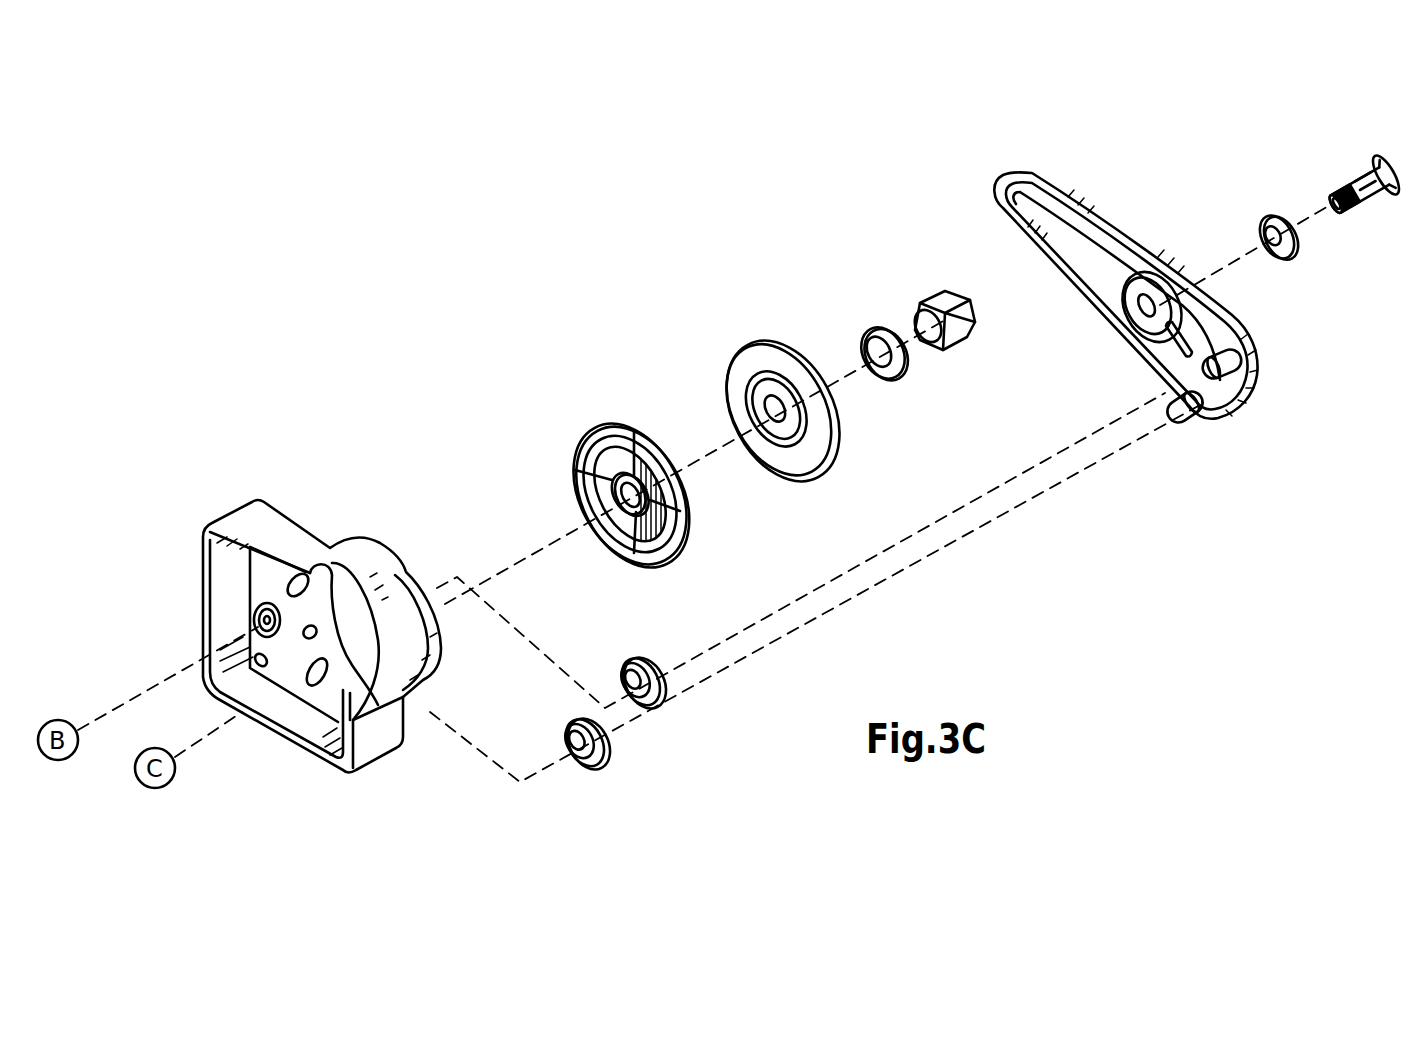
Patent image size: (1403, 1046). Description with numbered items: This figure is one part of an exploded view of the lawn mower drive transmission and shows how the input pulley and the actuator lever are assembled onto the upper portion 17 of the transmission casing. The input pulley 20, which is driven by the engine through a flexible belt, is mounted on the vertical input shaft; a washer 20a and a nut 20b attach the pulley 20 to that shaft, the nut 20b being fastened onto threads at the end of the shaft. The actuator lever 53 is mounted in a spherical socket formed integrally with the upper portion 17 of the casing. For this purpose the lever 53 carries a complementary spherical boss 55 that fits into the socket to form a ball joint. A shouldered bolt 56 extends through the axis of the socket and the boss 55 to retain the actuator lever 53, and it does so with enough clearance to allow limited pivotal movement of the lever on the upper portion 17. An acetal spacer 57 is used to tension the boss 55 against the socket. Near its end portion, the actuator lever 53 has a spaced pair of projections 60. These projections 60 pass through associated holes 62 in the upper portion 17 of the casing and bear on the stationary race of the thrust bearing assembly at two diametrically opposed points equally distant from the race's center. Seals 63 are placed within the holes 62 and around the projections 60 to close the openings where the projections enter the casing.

The upper portion 17 is at (273, 523).
The holes 62 is at (287, 590).
The input pulley 20 is at (724, 383).
The washer 20a is at (866, 338).
The nut 20b is at (932, 292).
The actuator lever 53 is at (1093, 203).
The spherical boss 55 is at (1128, 293).
The shouldered bolt 56 is at (1368, 163).
The acetal spacer 57 is at (1292, 247).
The projections 60 is at (1242, 346).
The seals 63 is at (660, 710).